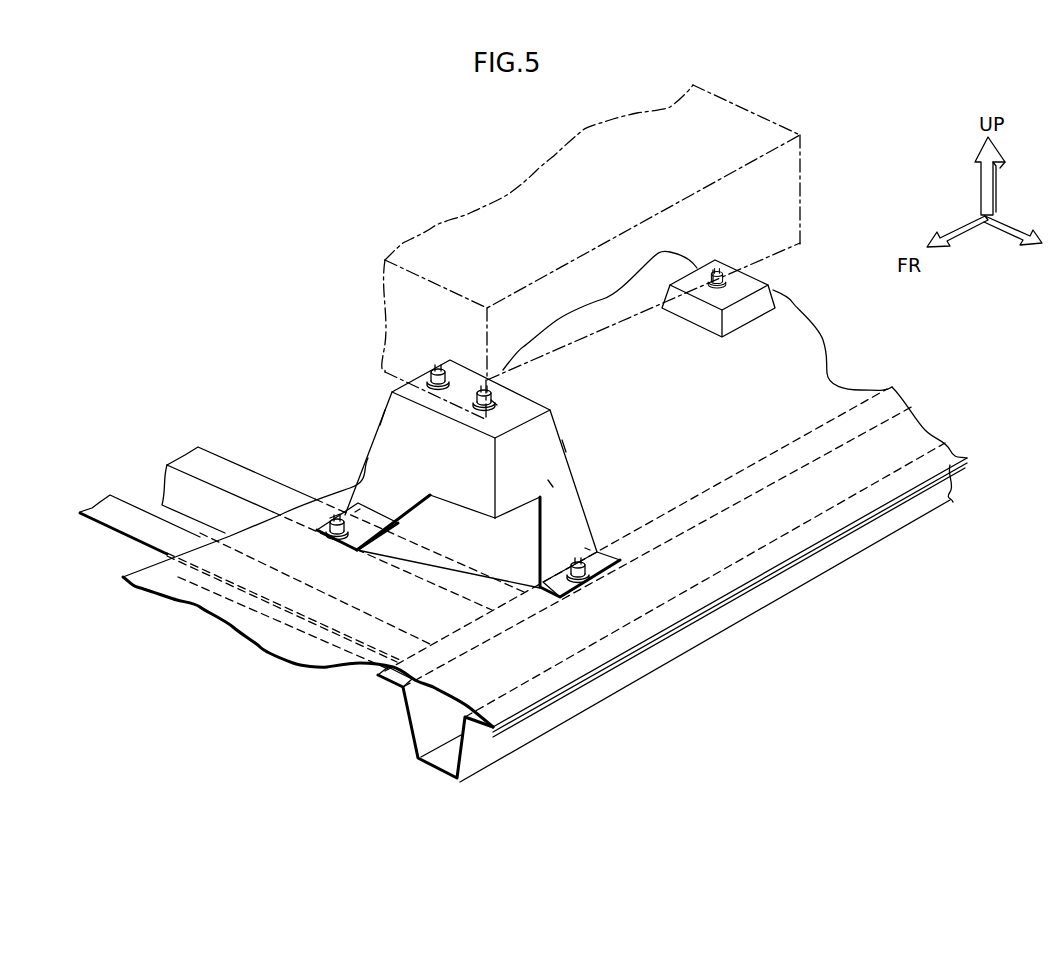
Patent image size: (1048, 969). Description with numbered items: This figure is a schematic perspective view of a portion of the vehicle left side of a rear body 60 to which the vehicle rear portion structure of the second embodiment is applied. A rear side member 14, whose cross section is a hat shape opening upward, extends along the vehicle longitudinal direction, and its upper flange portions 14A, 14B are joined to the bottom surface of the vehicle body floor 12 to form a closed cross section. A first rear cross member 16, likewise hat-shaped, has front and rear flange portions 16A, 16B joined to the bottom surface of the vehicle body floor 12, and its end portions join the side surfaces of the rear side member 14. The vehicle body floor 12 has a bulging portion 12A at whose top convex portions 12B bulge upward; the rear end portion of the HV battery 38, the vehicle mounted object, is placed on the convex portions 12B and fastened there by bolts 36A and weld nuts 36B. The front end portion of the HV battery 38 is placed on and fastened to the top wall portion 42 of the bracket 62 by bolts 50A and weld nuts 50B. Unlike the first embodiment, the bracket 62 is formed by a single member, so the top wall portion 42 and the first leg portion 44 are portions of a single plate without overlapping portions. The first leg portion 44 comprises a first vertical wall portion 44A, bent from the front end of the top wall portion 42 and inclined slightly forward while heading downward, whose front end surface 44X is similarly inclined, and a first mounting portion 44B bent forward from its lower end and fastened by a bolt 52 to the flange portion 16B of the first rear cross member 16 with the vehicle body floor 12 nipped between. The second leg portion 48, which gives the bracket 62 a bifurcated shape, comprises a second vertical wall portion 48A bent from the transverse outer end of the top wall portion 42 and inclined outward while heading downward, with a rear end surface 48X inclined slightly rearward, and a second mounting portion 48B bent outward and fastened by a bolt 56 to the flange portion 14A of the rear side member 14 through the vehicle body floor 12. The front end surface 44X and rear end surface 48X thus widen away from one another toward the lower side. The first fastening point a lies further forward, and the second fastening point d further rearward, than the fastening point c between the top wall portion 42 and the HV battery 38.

The vehicle body floor 12 is at (906, 434).
The bulging portion 12A is at (776, 337).
The convex portion 12B is at (775, 283).
The rear side member 14 is at (685, 646).
The flange portion 14A is at (390, 690).
The flange portion 14B is at (468, 719).
The first rear cross member 16 is at (130, 543).
The front flange portion 16A is at (127, 515).
The rear flange portion 16B is at (216, 467).
The bolt 36A is at (723, 272).
The weld nut 36B is at (715, 266).
The HV battery 38 is at (812, 150).
The top wall portion 42 is at (516, 382).
The first leg portion 44 is at (368, 461).
The first vertical wall portion 44A is at (380, 468).
The first mounting portion 44B is at (348, 545).
The front end surface 44X is at (328, 520).
The second leg portion 48 is at (609, 508).
The second vertical wall portion 48A is at (556, 485).
The second mounting portion 48B is at (612, 562).
The rear end surface 48X is at (567, 451).
The bolt 50A is at (486, 383).
The weld nut 50B is at (422, 372).
The bolt 52 is at (346, 524).
The bolt 56 is at (578, 562).
The rear body 60 is at (852, 640).
The bracket 62 is at (601, 439).
The first fastening point a is at (358, 511).
The fastening point c is at (497, 407).
The second fastening point d is at (587, 549).